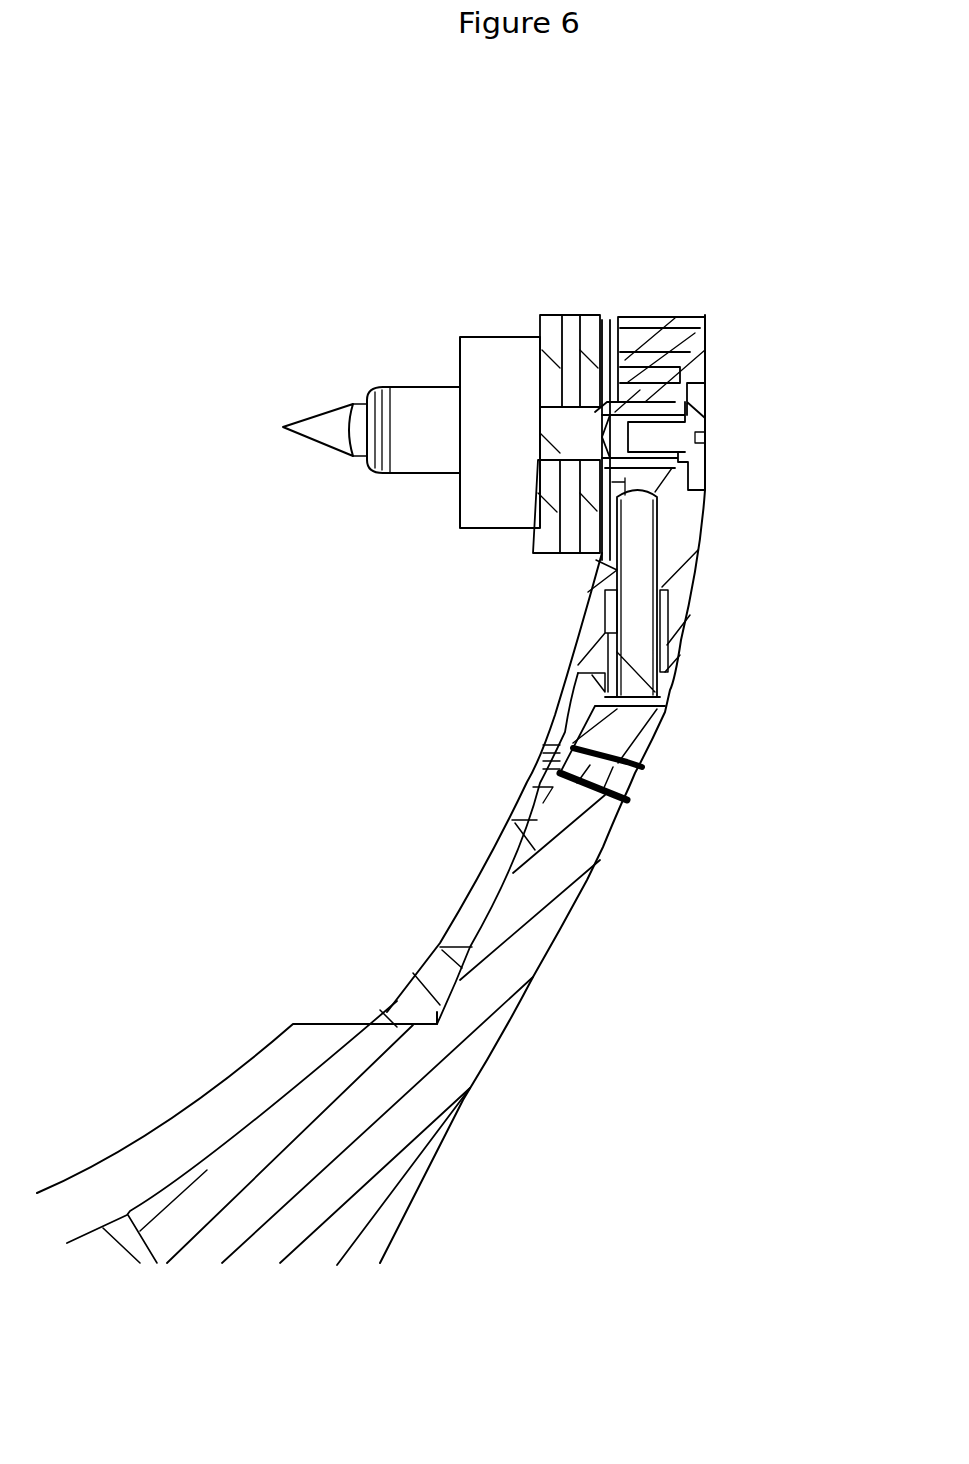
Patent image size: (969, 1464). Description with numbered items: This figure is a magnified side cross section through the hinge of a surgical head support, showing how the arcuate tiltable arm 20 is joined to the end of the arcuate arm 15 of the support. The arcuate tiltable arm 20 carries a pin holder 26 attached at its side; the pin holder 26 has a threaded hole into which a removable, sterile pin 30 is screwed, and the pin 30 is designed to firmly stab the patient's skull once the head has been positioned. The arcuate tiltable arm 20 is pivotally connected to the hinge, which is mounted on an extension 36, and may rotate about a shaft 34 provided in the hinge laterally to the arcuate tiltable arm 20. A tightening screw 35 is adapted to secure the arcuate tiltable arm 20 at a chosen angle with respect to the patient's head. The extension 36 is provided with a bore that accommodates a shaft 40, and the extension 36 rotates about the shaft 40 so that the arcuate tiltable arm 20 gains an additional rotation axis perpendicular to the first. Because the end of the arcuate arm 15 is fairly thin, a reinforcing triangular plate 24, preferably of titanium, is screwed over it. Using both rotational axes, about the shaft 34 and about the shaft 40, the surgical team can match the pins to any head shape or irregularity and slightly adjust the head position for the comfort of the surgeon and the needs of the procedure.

The arcuate arm 15 is at (257, 1092).
The arcuate tiltable arm 20 is at (508, 372).
The triangular plate 24 is at (498, 868).
The pin holder 26 is at (425, 415).
The pin 30 is at (330, 437).
The shaft 34 is at (700, 348).
The tightening screw 35 is at (692, 465).
The extension 36 is at (680, 548).
The shaft 40 is at (633, 615).